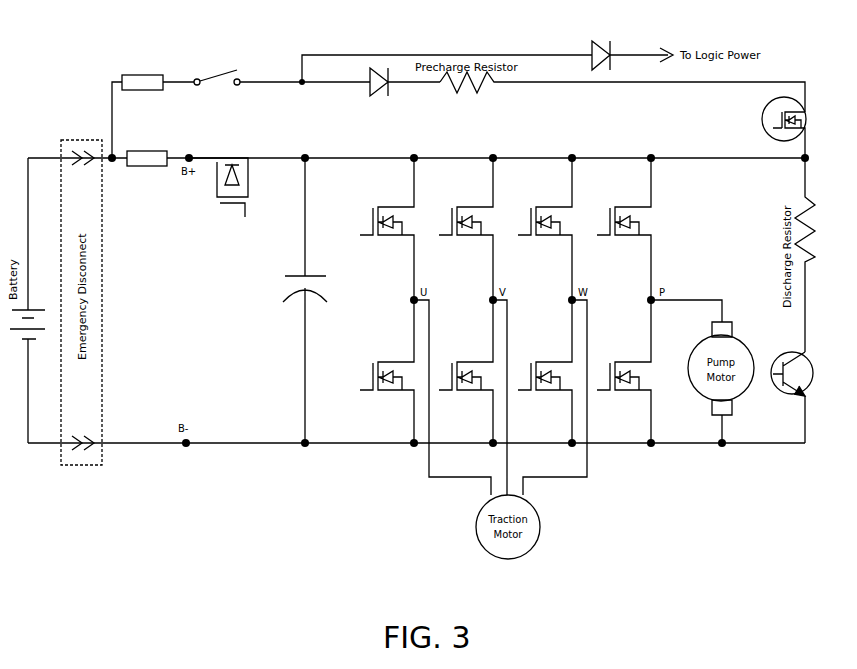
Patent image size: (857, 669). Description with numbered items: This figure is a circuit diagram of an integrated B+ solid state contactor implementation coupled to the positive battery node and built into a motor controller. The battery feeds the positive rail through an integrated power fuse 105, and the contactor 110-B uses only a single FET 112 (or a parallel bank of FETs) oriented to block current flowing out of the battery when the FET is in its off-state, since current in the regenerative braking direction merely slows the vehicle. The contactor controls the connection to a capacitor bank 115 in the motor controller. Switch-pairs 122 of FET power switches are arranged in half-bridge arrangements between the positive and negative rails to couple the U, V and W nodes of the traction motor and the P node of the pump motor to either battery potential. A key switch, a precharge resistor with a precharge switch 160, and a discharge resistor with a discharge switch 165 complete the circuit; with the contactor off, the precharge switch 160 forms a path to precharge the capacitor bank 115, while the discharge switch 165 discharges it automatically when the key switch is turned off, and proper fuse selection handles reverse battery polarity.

The power fuse 105 is at (150, 170).
The contactor 110-B is at (292, 112).
The FET 112 is at (220, 215).
The capacitor bank 115 is at (292, 300).
The switch-pairs 122 is at (368, 229).
The precharge switch 160 is at (762, 121).
The discharge switch 165 is at (778, 352).